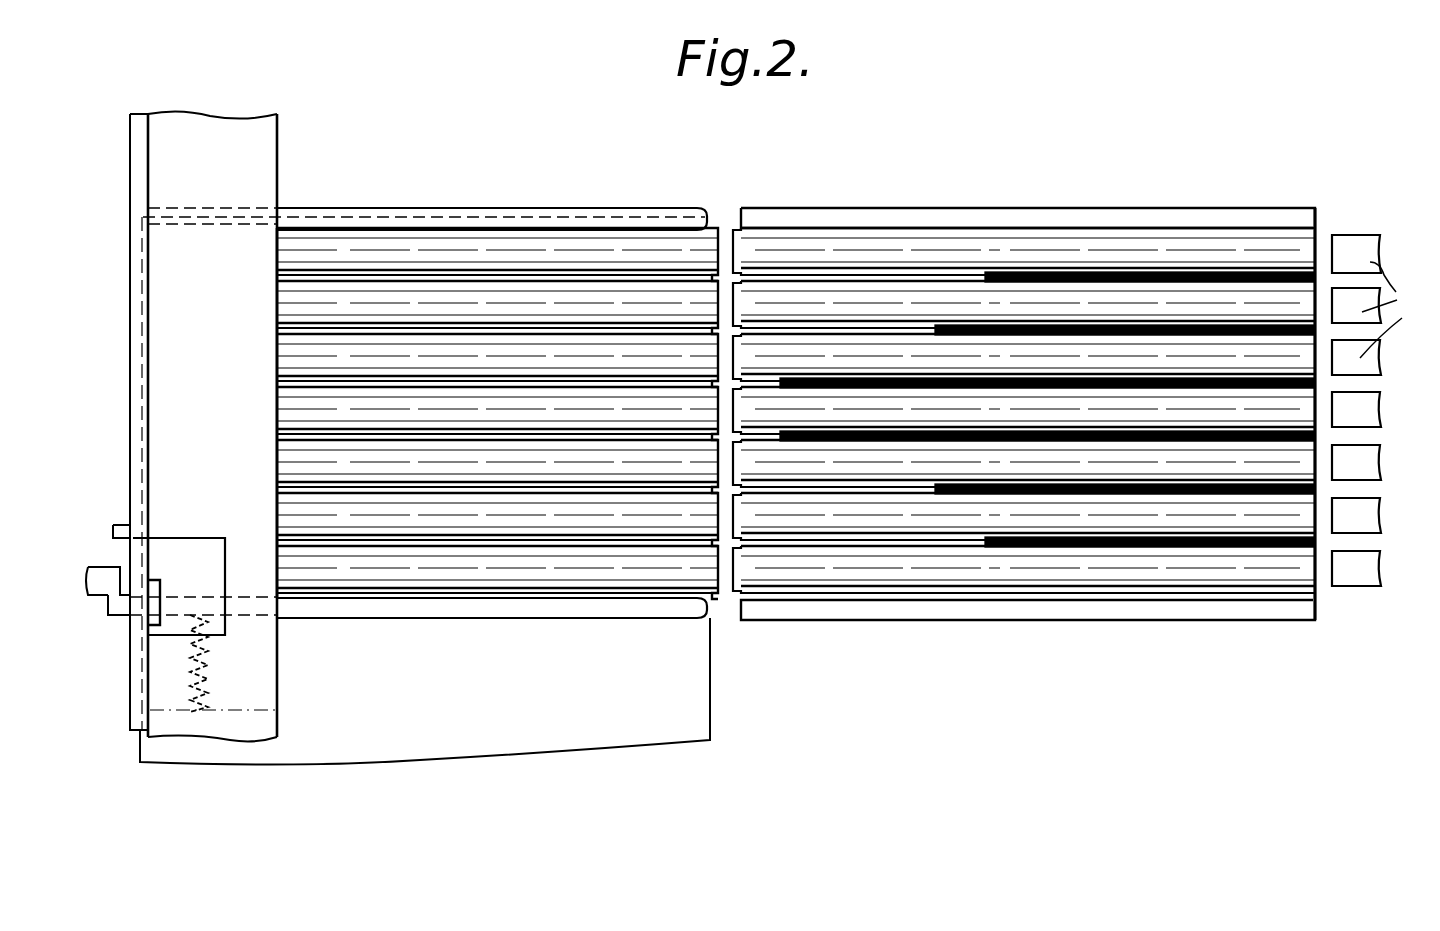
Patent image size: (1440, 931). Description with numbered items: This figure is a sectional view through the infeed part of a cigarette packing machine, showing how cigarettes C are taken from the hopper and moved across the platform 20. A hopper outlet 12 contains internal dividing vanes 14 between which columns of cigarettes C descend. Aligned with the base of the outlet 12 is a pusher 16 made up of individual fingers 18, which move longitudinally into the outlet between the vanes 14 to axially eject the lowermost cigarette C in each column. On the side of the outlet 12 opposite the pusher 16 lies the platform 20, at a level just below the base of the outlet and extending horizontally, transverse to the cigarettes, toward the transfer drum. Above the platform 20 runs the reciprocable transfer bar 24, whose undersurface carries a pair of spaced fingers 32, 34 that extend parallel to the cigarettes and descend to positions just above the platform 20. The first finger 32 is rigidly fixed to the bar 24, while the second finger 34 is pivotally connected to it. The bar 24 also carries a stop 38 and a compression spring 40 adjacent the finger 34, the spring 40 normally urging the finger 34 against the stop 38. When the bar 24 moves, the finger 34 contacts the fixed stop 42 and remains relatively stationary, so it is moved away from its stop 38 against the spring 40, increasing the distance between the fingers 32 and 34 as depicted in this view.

The hopper outlet 12 is at (1022, 208).
The dividing vane 14 is at (1073, 442).
The pusher 16 is at (1361, 224).
The pusher finger 18 is at (1392, 310).
The platform 20 is at (478, 708).
The transfer bar 24 is at (202, 122).
The first finger 32 is at (232, 208).
The second finger 34 is at (168, 605).
The stop 38 is at (115, 525).
The compression spring 40 is at (182, 675).
The fixed stop 42 is at (112, 568).
The cigarettes C is at (410, 295).